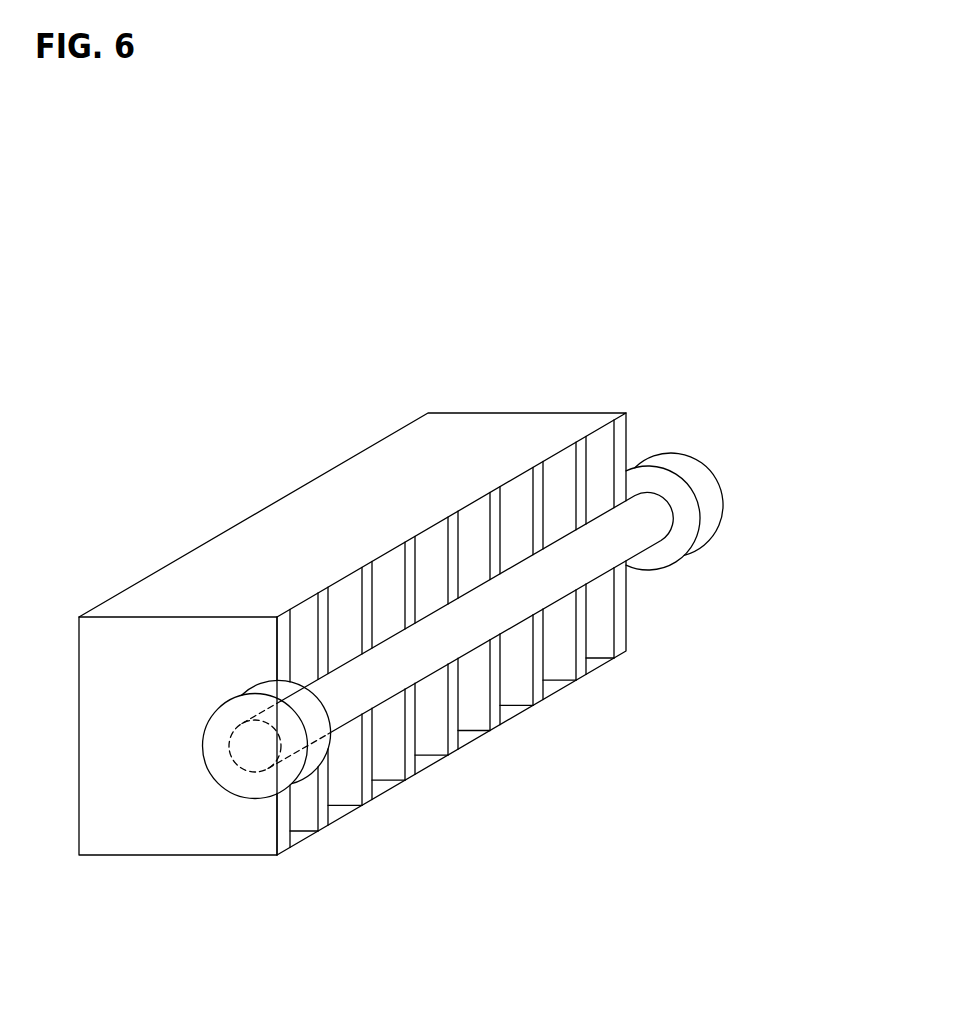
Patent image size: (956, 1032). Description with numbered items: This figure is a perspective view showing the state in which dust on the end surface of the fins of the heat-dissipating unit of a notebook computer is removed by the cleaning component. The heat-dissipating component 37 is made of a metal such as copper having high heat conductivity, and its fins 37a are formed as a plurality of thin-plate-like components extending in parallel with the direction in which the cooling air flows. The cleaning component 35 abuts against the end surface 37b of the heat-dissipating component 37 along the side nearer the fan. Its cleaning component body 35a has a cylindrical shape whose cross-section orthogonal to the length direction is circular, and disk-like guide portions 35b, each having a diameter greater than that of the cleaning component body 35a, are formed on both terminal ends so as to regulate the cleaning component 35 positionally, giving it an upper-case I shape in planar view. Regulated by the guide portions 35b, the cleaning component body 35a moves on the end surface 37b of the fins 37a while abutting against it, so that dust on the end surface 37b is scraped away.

The heat-dissipating component 37 is at (352, 606).
The fins 37a is at (508, 514).
The end surface 37b is at (538, 505).
The cleaning component 35 is at (538, 626).
The cleaning component body 35a is at (585, 567).
The guide portions 35b is at (711, 534).